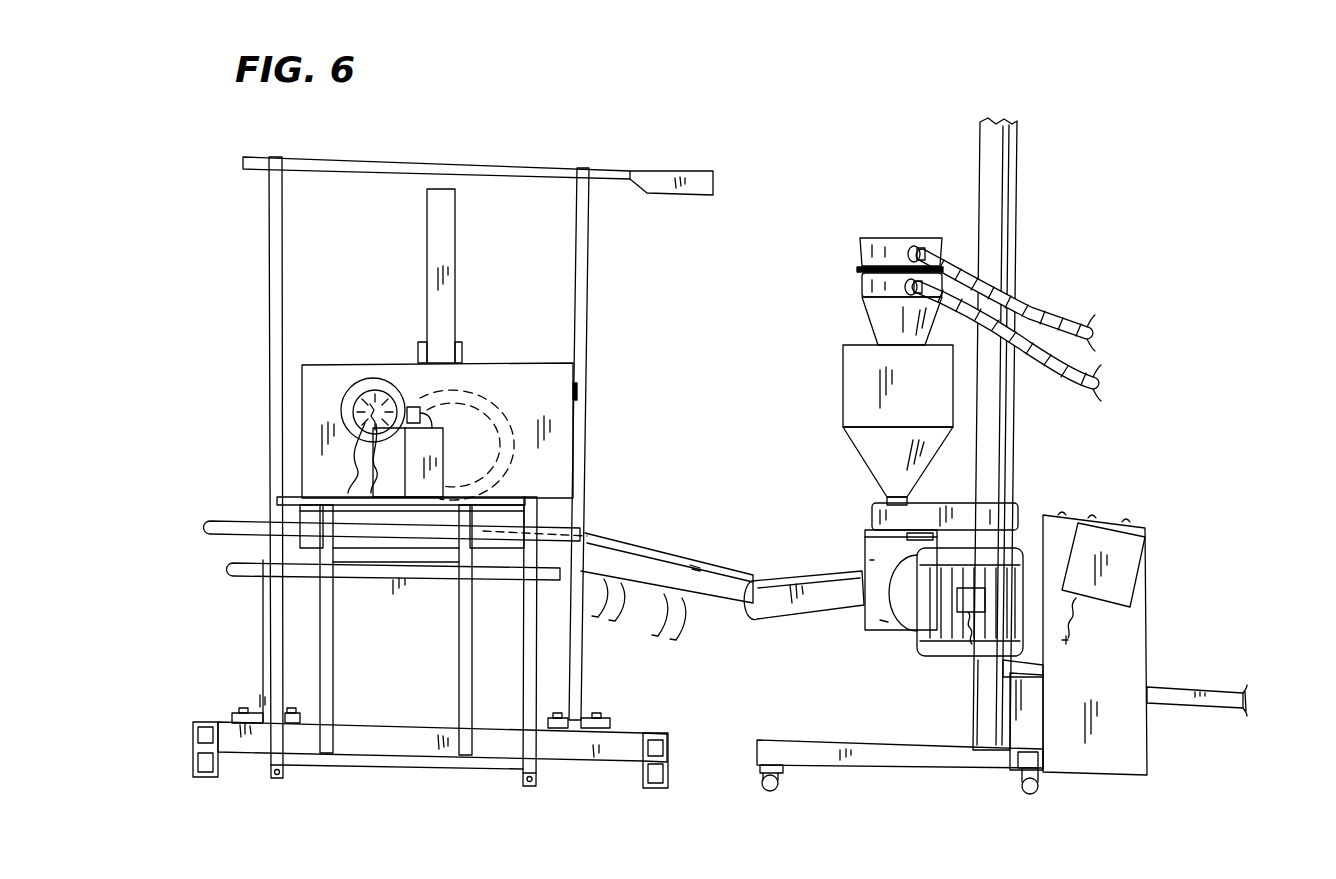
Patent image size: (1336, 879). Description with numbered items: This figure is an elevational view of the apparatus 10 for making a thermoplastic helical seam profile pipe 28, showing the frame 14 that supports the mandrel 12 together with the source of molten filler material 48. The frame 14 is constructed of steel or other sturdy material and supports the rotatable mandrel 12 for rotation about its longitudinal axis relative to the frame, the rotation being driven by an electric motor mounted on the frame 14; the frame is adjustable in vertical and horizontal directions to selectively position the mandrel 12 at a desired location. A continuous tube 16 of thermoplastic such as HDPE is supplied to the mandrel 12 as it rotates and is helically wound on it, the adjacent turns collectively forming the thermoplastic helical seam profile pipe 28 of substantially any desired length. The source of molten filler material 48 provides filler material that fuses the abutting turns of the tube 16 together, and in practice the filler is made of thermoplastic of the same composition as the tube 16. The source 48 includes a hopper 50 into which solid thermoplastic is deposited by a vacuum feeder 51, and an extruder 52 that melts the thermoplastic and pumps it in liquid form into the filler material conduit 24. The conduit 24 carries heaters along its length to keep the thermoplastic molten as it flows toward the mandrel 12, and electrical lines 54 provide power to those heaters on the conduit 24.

The apparatus 10 is at (606, 143).
The rotatable mandrel 12 is at (491, 410).
The frame 14 is at (266, 588).
The continuous tube 16 is at (636, 533).
The filler material conduit 24 is at (717, 607).
The thermoplastic helical seam profile pipe 28 is at (500, 413).
The source of molten filler material 48 is at (885, 155).
The hopper 50 is at (843, 407).
The vacuum feeder 51 is at (858, 287).
The extruder 52 is at (808, 572).
The electrical lines 54 is at (690, 620).